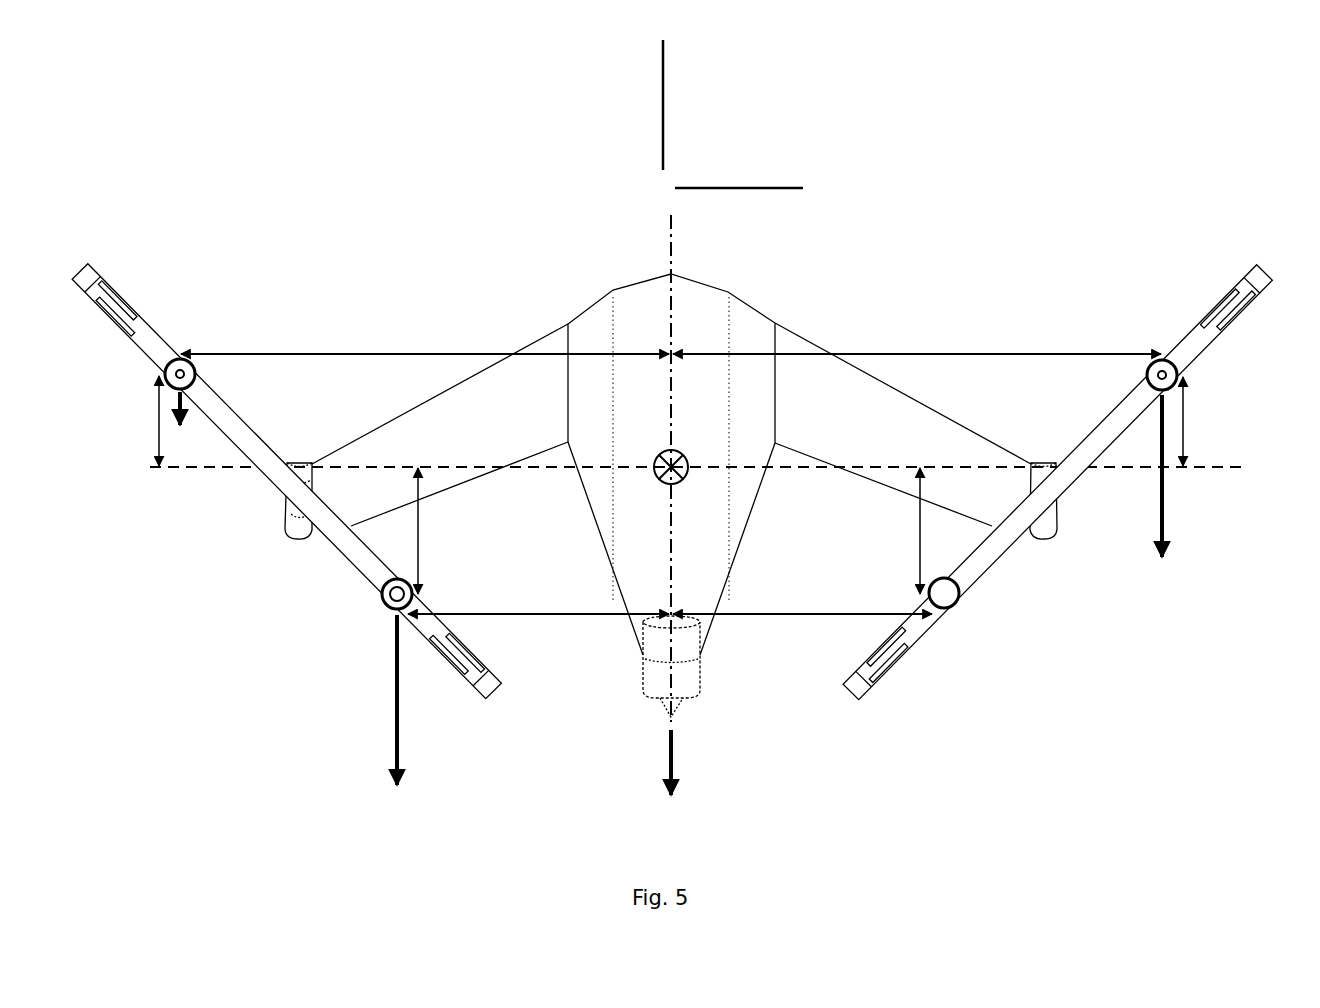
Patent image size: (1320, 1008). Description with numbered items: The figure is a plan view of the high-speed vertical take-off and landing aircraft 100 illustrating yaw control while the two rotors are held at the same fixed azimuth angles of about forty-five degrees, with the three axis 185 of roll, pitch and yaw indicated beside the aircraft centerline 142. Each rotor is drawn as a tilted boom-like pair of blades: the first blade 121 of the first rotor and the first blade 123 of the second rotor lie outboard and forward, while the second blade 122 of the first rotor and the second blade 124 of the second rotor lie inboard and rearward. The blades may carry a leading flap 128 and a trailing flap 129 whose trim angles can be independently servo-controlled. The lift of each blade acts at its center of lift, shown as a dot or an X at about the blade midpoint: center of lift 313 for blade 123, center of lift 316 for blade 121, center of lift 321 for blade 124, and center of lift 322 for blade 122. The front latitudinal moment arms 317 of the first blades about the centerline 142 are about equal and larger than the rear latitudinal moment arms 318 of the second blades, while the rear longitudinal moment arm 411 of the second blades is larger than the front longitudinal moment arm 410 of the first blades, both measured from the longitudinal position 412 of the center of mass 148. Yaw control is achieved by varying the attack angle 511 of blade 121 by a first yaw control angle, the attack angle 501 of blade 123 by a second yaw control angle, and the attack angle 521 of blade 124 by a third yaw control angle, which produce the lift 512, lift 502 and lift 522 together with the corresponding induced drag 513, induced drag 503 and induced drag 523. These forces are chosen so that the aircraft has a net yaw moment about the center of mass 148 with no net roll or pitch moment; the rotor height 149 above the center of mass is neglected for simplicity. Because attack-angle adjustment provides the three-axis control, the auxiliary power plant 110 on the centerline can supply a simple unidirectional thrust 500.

The high-speed vertical take-off and landing aircraft 100 is at (450, 196).
The auxiliary power plant 110 is at (645, 672).
The first blade of the first rotor 121 is at (1267, 270).
The second blade of the first rotor 122 is at (857, 686).
The first blade of the second rotor 123 is at (77, 272).
The second blade of the second rotor 124 is at (490, 688).
The leading flap 128 is at (1208, 316).
The trailing flap 129 is at (1238, 317).
The aircraft centerline 142 is at (668, 247).
The center of mass 148 is at (660, 455).
The rotor height 149 is at (303, 452).
The three axis 185 is at (634, 72).
The center of lift of the first blade of the second rotor 313 is at (160, 368).
The center of lift of the first blade of the first rotor 316 is at (1183, 370).
The front latitudinal moment arm 317 is at (671, 341).
The rear latitudinal moment arm 318 is at (670, 600).
The center of lift of the second blade of the second rotor 321 is at (382, 588).
The center of lift of the second blade of the first rotor 322 is at (962, 588).
The front longitudinal moment arm 410 is at (671, 421).
The rear longitudinal moment arm 411 is at (669, 531).
The longitudinal position of the center of mass 412 is at (1226, 470).
The unidirectional thrust 500 is at (670, 781).
The attack angle of the first blade of the second rotor 501 is at (128, 250).
The lift of the first blade of second rotor 502 is at (168, 366).
The induced drag of the first blade of second rotor 503 is at (187, 423).
The attack angle of the first blade of the first rotor 511 is at (1238, 237).
The lift of the first blade of first rotor 512 is at (1174, 367).
The induced drag of the first blade of first rotor 513 is at (1163, 494).
The attack angle of the second blade of the second rotor 521 is at (528, 652).
The lift of the second blade of second rotor 522 is at (388, 606).
The induced drag of the second blade of second rotor 523 is at (395, 719).